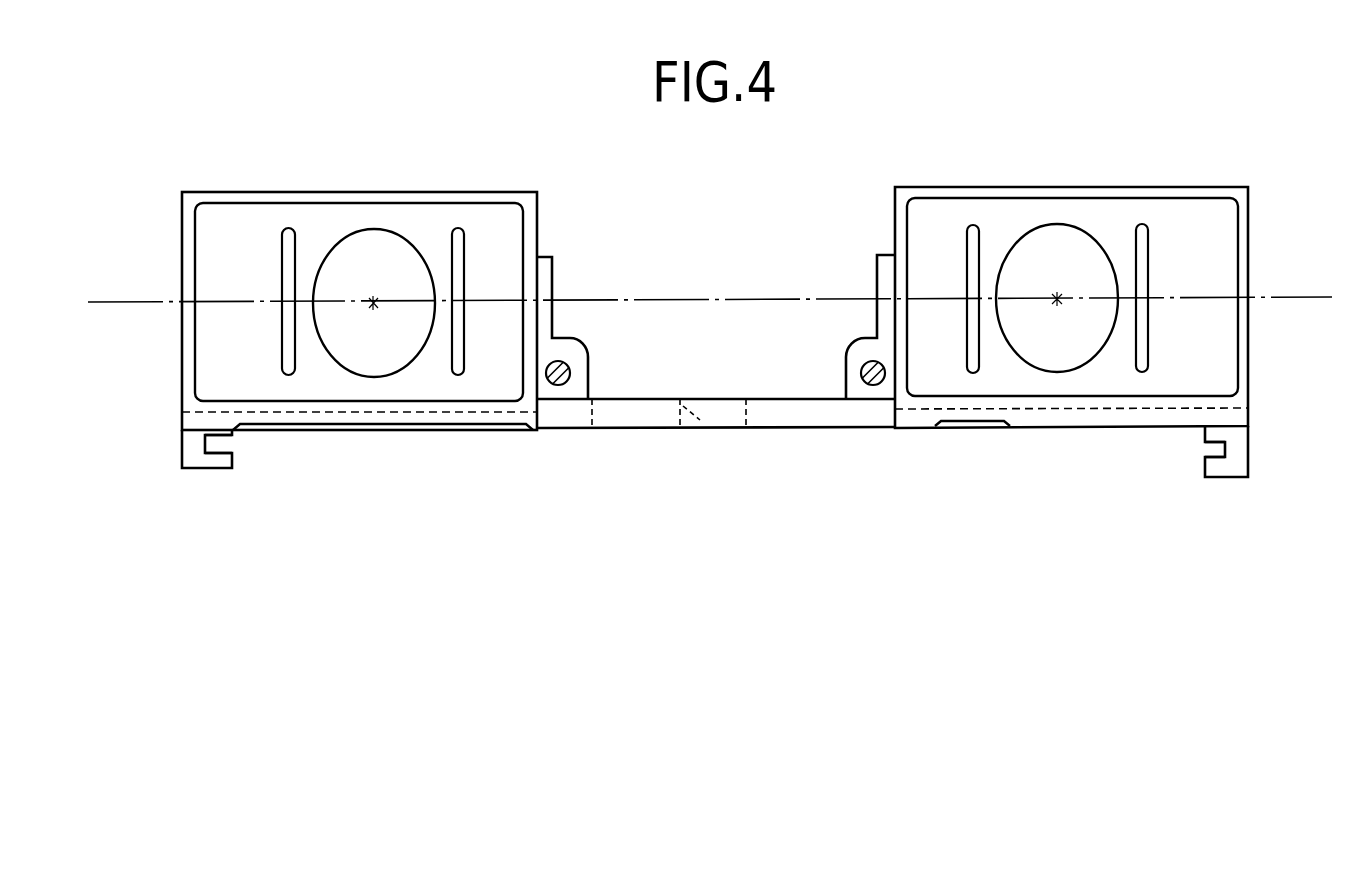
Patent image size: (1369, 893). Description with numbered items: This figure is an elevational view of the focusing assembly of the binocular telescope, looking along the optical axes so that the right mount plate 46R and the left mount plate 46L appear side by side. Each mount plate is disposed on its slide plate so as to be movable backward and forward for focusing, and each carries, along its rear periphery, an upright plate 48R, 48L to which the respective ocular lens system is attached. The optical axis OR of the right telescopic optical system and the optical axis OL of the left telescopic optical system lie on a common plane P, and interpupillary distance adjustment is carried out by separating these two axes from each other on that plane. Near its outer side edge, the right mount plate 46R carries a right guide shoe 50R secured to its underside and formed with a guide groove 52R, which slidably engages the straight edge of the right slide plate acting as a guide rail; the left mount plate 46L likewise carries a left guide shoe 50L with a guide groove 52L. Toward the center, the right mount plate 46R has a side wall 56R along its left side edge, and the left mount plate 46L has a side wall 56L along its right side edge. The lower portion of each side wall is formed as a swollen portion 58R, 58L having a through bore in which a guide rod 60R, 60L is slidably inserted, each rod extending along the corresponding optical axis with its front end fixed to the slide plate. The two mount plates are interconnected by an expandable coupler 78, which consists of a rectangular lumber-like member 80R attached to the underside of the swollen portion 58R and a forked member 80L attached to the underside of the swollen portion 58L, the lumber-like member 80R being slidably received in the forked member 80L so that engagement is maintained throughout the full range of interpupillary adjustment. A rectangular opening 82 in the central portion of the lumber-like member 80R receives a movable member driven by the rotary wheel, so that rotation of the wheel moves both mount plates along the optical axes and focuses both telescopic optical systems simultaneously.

The plane P is at (122, 305).
The optical axis of the left telescopic optical system OL is at (373, 310).
The optical axis of the right telescopic optical system OR is at (1057, 306).
The left mount plate 46L is at (388, 430).
The right mount plate 46R is at (972, 426).
The upright plate 48L is at (182, 211).
The upright plate 48R is at (1250, 222).
The left guide shoe 50L is at (193, 450).
The right guide shoe 50R is at (1238, 439).
The guide groove 52L is at (227, 440).
The guide groove 52R is at (1208, 450).
The side wall 56L is at (553, 272).
The side wall 56R is at (876, 322).
The swollen portion 58L is at (590, 350).
The swollen portion 58R is at (845, 352).
The guide rod 60L is at (560, 385).
The guide rod 60R is at (861, 373).
The expandable coupler 78 is at (655, 398).
The forked member 80L is at (795, 418).
The lumber-like member 80R is at (890, 430).
The rectangular opening 82 is at (700, 430).